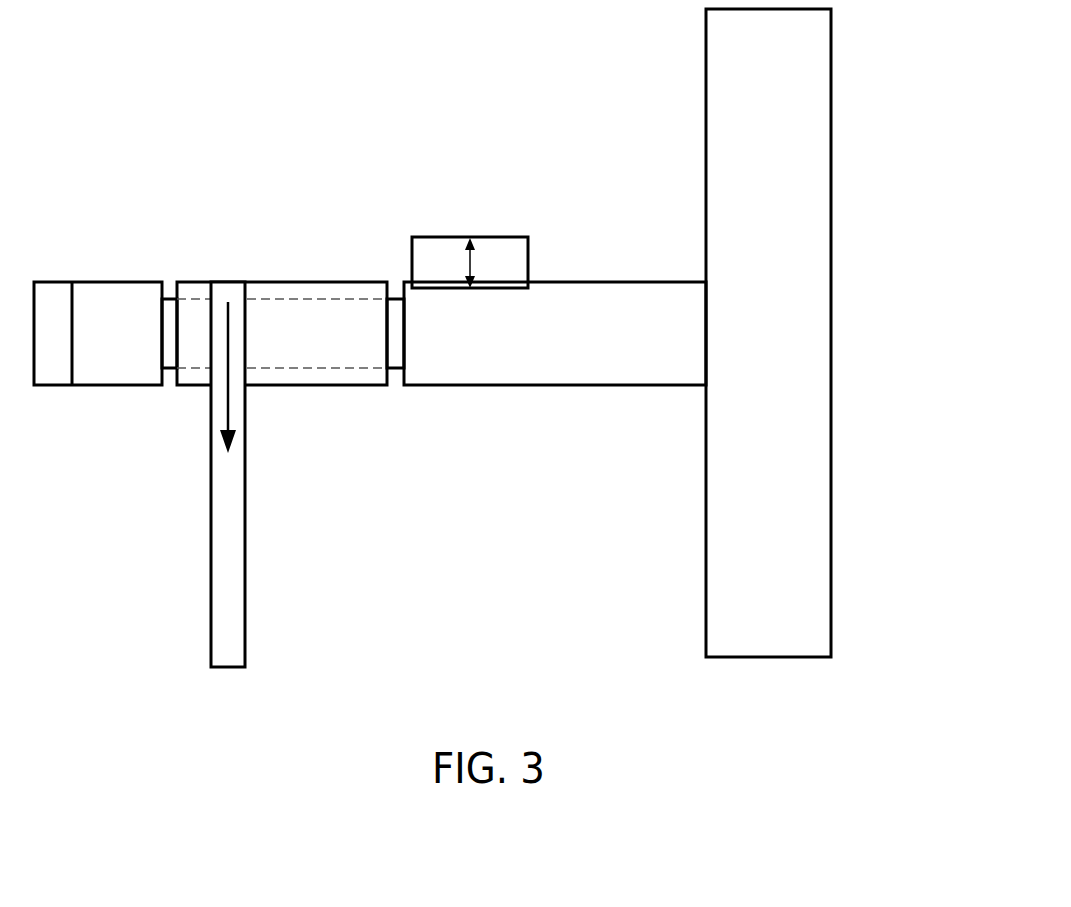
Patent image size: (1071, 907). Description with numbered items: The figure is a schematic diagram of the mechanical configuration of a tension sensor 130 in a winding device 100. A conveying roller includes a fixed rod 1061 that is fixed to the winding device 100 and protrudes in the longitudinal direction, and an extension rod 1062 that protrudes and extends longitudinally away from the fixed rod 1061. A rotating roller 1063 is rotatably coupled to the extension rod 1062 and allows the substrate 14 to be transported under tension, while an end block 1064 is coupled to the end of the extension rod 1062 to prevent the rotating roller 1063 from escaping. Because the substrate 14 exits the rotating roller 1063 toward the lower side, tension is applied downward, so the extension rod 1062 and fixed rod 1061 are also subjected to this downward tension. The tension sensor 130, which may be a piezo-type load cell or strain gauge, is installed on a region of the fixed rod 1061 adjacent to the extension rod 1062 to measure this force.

The winding device 100 is at (831, 124).
The tension sensor 130 is at (528, 246).
The fixed rod 1061 is at (556, 386).
The extension rod 1062 is at (345, 370).
The rotating roller 1063 is at (293, 386).
The end block 1064 is at (113, 281).
The substrate 14 is at (211, 598).